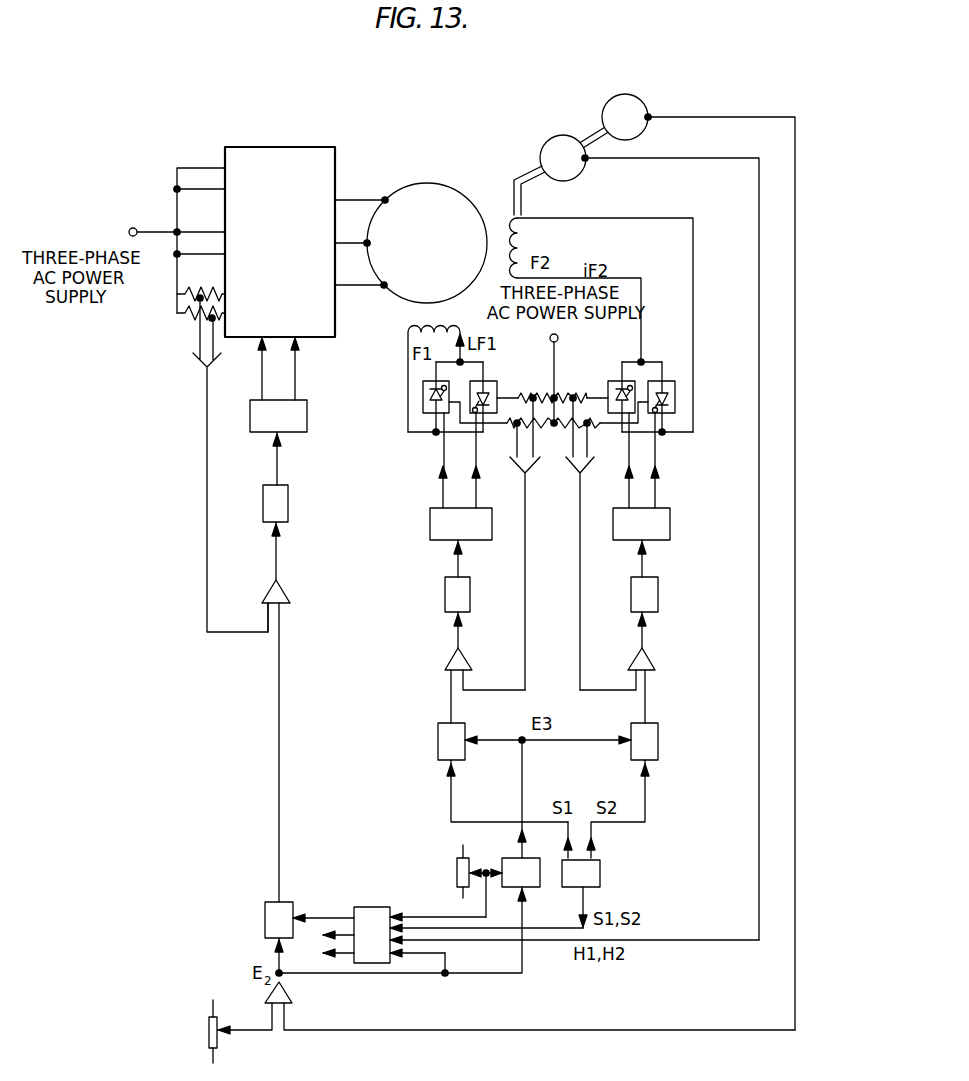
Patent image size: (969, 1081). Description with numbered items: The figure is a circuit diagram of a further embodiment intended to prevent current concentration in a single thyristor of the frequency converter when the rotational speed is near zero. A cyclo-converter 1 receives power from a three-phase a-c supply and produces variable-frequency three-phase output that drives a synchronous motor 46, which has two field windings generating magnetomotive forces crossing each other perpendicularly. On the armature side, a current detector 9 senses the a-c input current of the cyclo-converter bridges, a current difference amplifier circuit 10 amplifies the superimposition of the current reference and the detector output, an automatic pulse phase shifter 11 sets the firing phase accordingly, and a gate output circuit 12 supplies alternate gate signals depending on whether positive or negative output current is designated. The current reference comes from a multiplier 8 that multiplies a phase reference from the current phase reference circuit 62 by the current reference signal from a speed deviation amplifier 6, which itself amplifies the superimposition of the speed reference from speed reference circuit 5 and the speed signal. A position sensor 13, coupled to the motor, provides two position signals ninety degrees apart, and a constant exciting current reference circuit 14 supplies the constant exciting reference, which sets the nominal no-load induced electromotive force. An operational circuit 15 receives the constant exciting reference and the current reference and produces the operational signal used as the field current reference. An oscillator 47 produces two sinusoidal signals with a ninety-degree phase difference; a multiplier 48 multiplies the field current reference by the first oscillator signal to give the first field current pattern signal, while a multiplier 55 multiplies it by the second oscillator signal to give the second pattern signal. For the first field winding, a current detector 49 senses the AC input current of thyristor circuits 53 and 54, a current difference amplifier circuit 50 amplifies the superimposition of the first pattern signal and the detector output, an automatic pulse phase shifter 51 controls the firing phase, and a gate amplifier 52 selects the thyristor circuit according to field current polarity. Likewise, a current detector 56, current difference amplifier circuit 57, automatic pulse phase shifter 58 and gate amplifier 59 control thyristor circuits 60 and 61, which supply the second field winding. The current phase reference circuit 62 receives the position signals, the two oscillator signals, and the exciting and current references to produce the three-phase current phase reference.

The cyclo-converter 1 is at (335, 160).
The speed reference circuit 5 is at (206, 1033).
The speed deviation amplifier 6 is at (292, 993).
The multiplier 8 is at (265, 925).
The current detector 9 is at (212, 317).
The current difference amplifier circuit 10 is at (270, 592).
The automatic pulse phase shifter 11 is at (263, 512).
The gate output circuit 12 is at (250, 417).
The position sensor 13 is at (562, 134).
The constant exciting current reference circuit 14 is at (631, 94).
The operational circuit 15 is at (533, 887).
The synchronous motor 46 is at (432, 184).
The oscillator 47 is at (600, 880).
The multiplier 48 is at (438, 735).
The current detector 49 is at (519, 428).
The current difference amplifier circuit 50 is at (450, 661).
The automatic pulse phase shifter 51 is at (445, 597).
The gate amplifier 52 is at (430, 520).
The thyristor circuit 53 is at (423, 402).
The thyristor circuit 54 is at (497, 392).
The multiplier 55 is at (631, 743).
The current detector 56 is at (588, 428).
The current difference amplifier circuit 57 is at (655, 660).
The automatic pulse phase shifter 58 is at (658, 594).
The gate amplifier 59 is at (670, 530).
The thyristor circuit 60 is at (608, 392).
The thyristor circuit 61 is at (675, 397).
The current phase reference circuit 62 is at (388, 907).